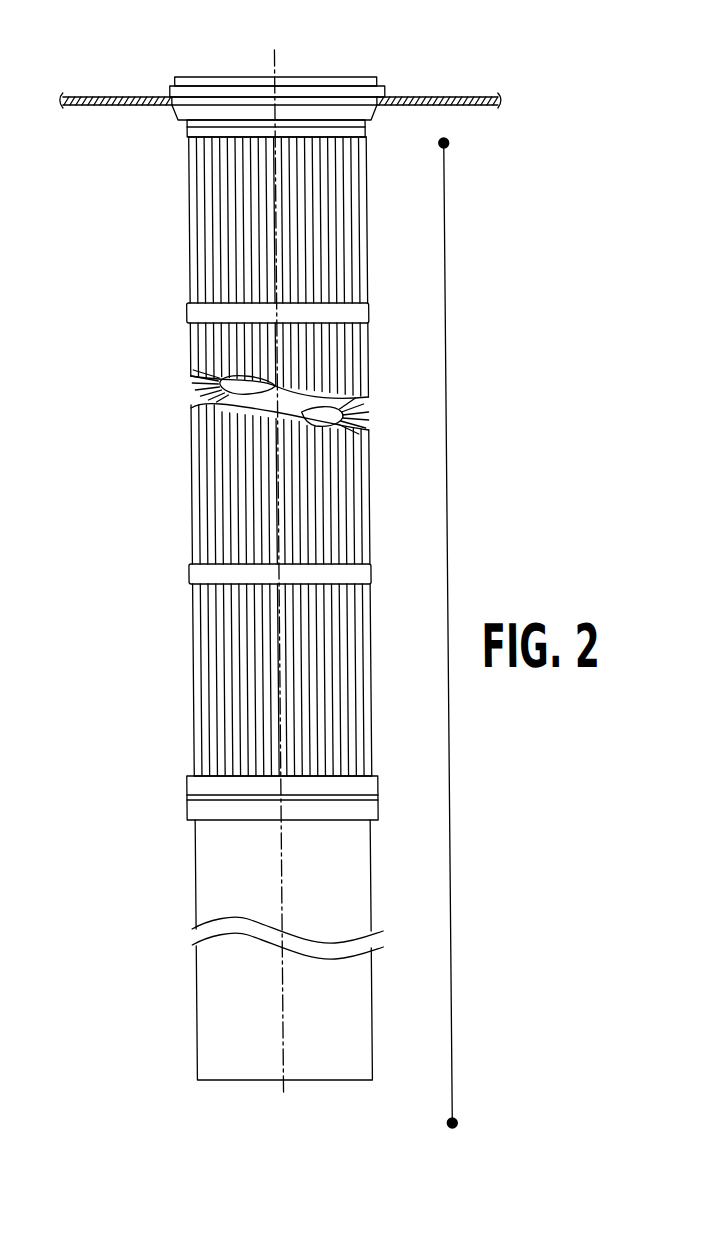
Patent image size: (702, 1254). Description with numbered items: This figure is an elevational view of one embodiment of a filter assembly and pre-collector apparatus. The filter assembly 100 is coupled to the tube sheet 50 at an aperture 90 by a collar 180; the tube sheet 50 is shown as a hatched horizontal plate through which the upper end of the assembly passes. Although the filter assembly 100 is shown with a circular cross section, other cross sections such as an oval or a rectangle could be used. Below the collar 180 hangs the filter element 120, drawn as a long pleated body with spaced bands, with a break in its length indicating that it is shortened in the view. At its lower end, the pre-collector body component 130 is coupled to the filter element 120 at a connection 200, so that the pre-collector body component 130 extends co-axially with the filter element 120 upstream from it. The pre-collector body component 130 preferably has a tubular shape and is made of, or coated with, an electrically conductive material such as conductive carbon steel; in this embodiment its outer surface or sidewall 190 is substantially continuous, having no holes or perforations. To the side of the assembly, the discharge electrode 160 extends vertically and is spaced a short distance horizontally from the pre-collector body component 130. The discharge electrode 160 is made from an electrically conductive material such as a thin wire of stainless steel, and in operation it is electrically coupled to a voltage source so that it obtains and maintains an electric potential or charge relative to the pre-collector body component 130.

The tube sheet 50 is at (451, 97).
The aperture 90 is at (186, 102).
The filter assembly 100 is at (147, 618).
The filter element 120 is at (365, 378).
The pre-collector body component 130 is at (363, 874).
The discharge electrode 160 is at (444, 937).
The collar 180 is at (383, 74).
The sidewall 190 is at (340, 992).
The connection 200 is at (376, 767).